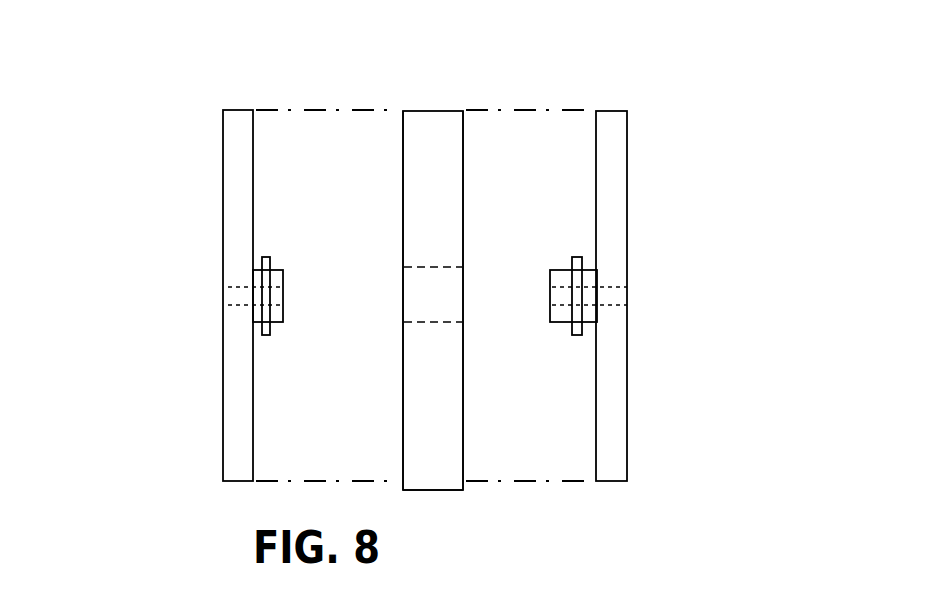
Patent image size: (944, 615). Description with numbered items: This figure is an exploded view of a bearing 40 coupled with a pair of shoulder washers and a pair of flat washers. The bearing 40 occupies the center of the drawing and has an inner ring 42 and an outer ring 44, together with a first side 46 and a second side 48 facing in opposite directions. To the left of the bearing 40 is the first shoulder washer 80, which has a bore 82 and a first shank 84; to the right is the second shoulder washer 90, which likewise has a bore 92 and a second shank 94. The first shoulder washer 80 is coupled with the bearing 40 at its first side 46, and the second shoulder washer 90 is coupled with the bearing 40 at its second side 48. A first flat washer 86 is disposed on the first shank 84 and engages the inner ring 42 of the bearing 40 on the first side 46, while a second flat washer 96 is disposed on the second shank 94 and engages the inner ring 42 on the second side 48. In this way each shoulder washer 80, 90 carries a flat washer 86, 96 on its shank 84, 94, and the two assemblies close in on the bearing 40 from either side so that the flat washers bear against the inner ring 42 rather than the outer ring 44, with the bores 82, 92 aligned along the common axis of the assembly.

The bearing 40 is at (433, 70).
The inner ring 42 is at (427, 247).
The outer ring 44 is at (433, 490).
The first side 46 is at (403, 437).
The second side 48 is at (463, 455).
The first shoulder washer 80 is at (173, 171).
The bore 82 is at (222, 297).
The first shank 84 is at (278, 322).
The first flat washer 86 is at (265, 255).
The second shoulder washer 90 is at (678, 170).
The bore 92 is at (627, 295).
The second shank 94 is at (562, 323).
The second flat washer 96 is at (577, 255).